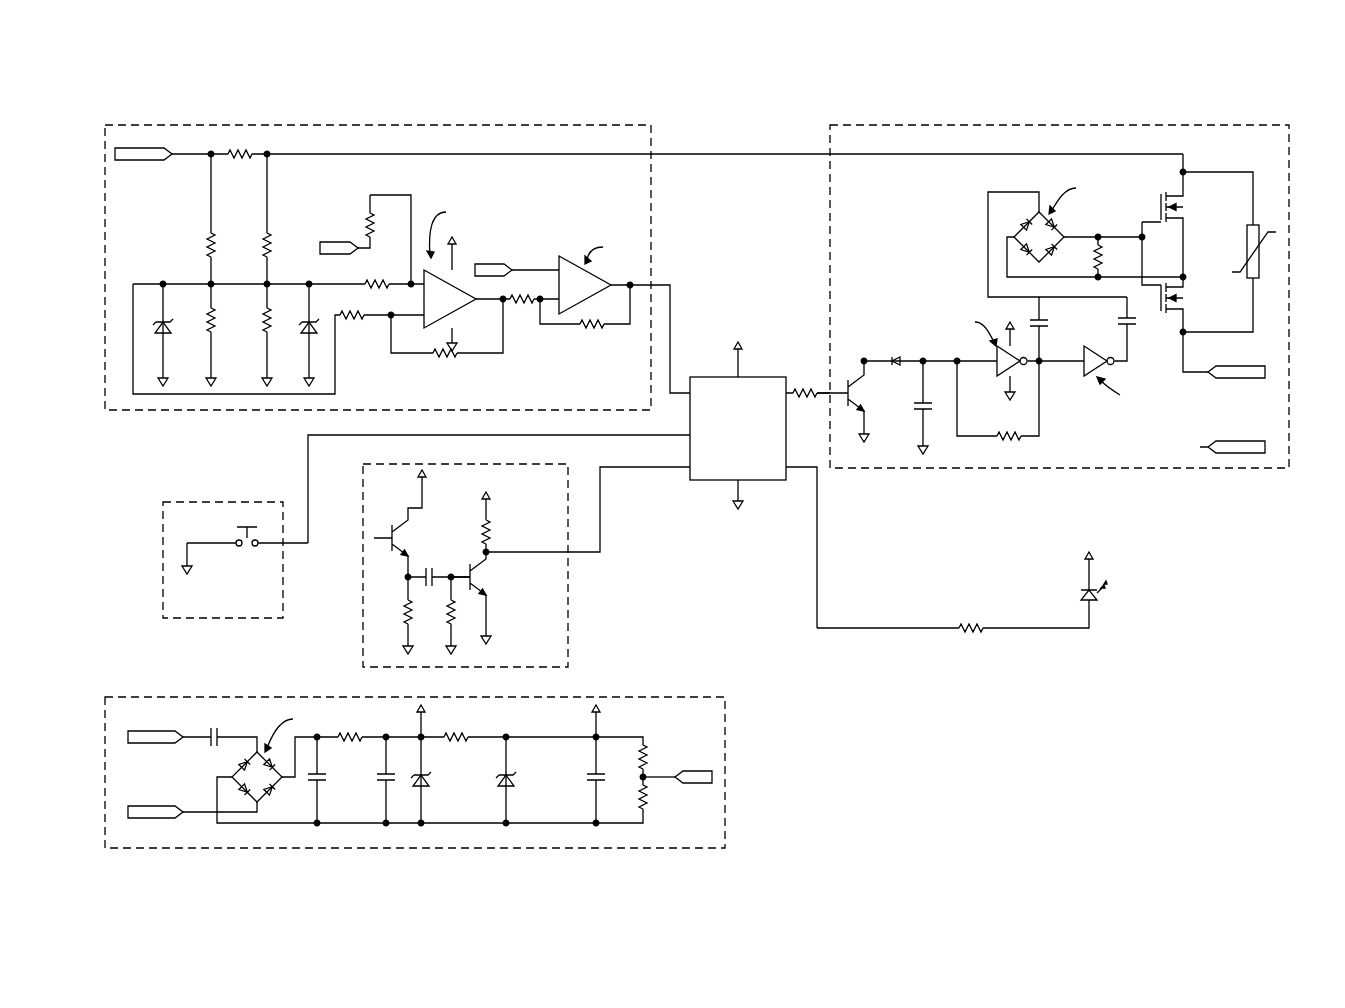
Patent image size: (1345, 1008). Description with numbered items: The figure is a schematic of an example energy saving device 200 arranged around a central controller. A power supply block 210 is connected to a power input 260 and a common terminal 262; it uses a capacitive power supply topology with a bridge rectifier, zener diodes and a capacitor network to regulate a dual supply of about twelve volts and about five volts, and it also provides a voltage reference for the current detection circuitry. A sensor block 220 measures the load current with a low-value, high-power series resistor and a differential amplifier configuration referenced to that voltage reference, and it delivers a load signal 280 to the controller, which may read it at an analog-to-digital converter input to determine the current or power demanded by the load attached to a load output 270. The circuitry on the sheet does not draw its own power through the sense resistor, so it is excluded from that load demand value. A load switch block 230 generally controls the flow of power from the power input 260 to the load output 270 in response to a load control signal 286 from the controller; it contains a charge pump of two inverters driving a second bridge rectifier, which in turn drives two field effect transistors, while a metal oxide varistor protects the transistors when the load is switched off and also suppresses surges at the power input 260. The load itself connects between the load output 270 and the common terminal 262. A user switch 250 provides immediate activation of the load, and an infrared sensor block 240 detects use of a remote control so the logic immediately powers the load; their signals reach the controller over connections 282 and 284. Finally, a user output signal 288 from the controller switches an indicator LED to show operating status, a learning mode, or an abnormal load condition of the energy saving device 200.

The energy saving device 200 is at (1156, 702).
The power supply block 210 is at (700, 698).
The sensor block 220 is at (642, 124).
The load switch block 230 is at (1263, 124).
The infrared sensor block 240 is at (577, 648).
The user switch 250 is at (169, 622).
The power input 260 is at (143, 147).
The common terminal 262 is at (1238, 455).
The load output 270 is at (1265, 372).
The load signal 280 is at (671, 292).
The signal line from switch to microcontroller 282 is at (308, 443).
The signal line from reset circuit to microcontroller 284 is at (600, 493).
The load control signal 286 is at (822, 392).
The user output signal 288 is at (817, 530).